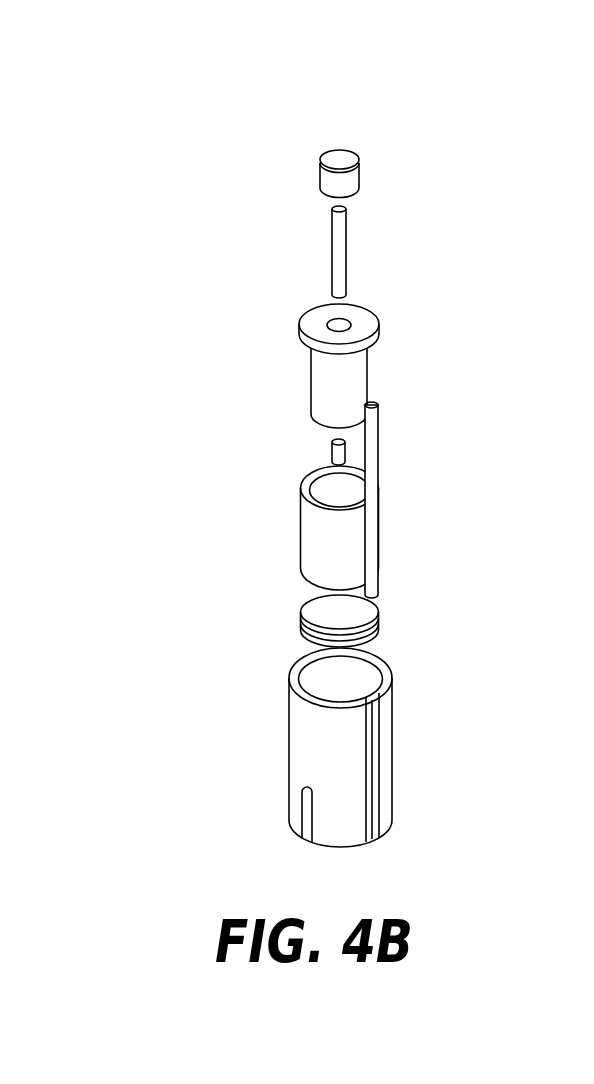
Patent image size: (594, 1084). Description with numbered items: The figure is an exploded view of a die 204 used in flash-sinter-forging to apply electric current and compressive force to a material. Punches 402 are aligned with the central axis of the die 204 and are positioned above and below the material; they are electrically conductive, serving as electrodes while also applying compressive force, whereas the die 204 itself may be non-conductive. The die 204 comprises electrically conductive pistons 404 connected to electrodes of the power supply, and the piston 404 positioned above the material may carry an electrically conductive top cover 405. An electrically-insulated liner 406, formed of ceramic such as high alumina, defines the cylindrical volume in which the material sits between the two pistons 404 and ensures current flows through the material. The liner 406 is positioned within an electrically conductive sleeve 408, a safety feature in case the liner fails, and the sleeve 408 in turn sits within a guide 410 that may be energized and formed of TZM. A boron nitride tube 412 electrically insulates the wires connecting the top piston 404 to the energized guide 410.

The die 204 is at (480, 108).
The top cover 405 is at (363, 165).
The punches 402 is at (349, 241).
The electrically-insulated liner 406 is at (383, 333).
The pistons 404 is at (328, 449).
The sleeve 408 is at (299, 527).
The boron nitride tube 412 is at (380, 428).
The guide 410 is at (290, 673).